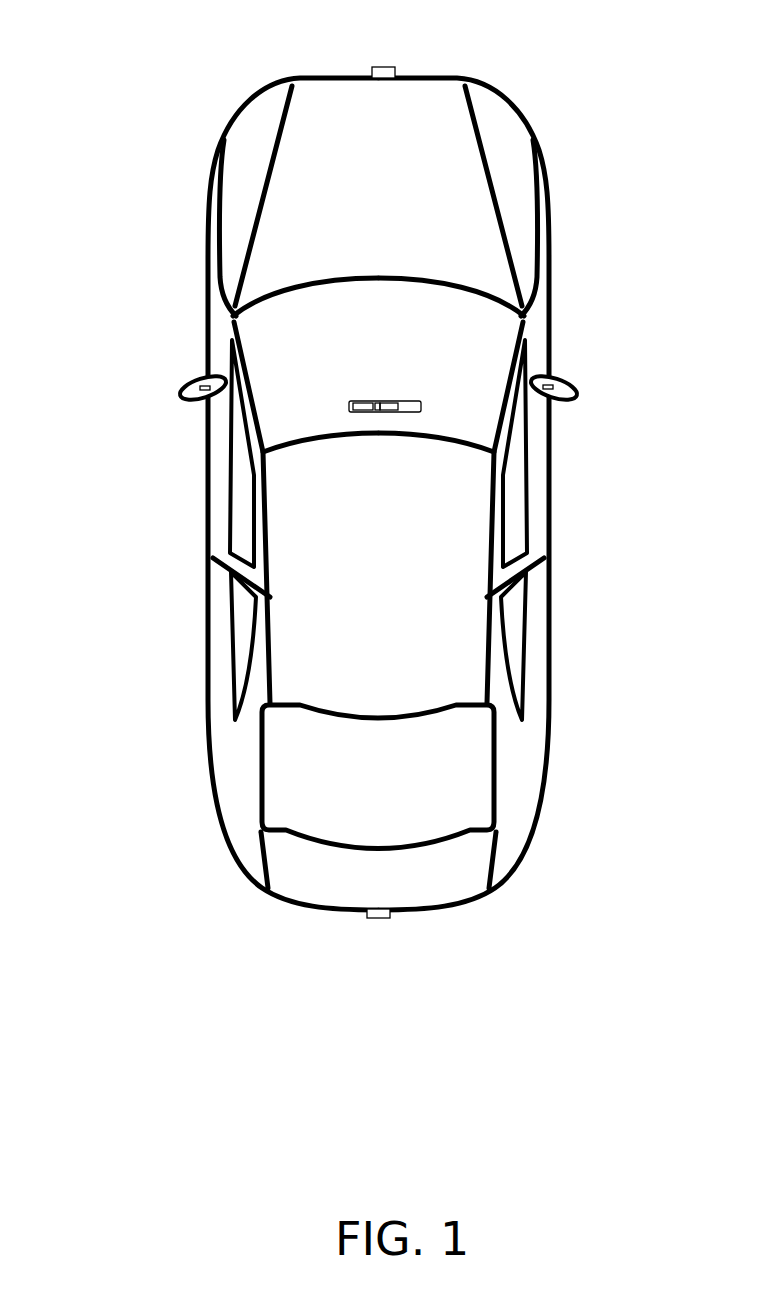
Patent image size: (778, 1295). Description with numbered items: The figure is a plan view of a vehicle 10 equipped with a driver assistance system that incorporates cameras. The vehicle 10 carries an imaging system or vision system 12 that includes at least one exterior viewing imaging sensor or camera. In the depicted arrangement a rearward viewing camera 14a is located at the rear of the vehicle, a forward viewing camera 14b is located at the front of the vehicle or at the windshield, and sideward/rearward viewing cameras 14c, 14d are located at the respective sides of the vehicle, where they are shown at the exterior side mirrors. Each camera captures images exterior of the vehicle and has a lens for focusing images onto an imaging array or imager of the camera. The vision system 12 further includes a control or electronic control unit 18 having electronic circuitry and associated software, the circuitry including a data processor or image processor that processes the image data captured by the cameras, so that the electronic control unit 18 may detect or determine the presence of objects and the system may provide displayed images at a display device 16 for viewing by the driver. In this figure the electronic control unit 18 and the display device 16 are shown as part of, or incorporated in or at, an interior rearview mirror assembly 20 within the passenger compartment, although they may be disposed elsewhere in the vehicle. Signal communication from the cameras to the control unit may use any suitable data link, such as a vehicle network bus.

The vehicle 10 is at (142, 92).
The vision system 12 is at (338, 927).
The rearward viewing camera 14a is at (387, 918).
The forward viewing camera 14b is at (388, 67).
The sideward/rearward viewing camera 14c is at (193, 385).
The sideward/rearward viewing camera 14d is at (560, 380).
The display device 16 is at (363, 402).
The electronic control unit 18 is at (382, 400).
The interior rearview mirror assembly 20 is at (422, 400).